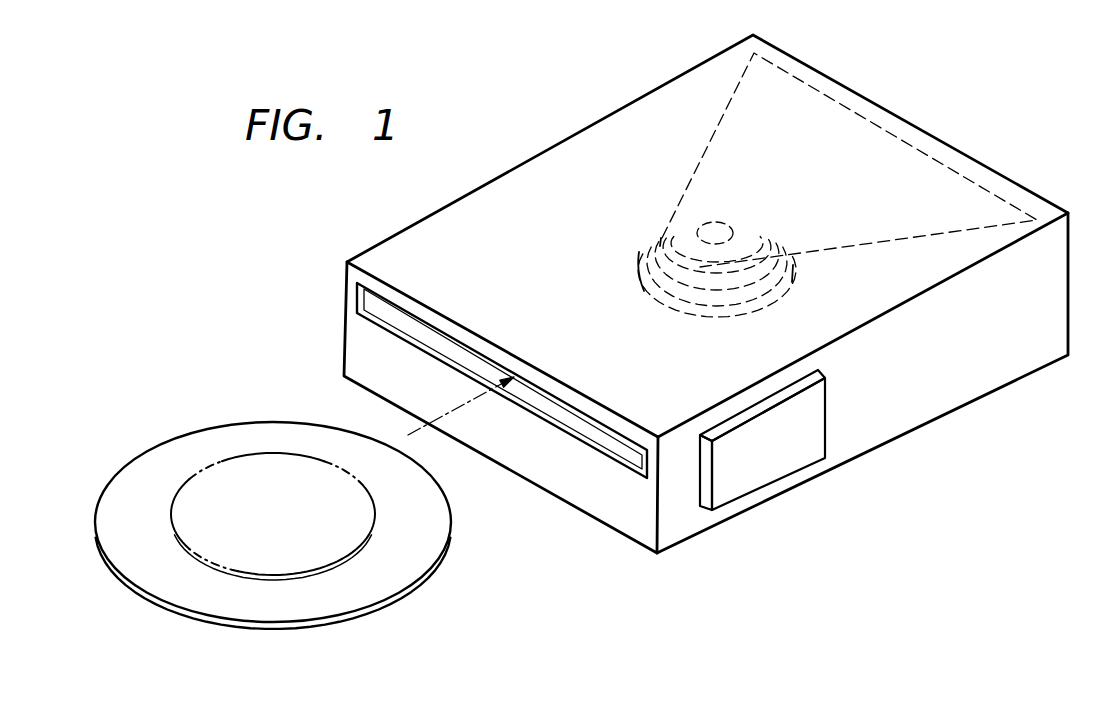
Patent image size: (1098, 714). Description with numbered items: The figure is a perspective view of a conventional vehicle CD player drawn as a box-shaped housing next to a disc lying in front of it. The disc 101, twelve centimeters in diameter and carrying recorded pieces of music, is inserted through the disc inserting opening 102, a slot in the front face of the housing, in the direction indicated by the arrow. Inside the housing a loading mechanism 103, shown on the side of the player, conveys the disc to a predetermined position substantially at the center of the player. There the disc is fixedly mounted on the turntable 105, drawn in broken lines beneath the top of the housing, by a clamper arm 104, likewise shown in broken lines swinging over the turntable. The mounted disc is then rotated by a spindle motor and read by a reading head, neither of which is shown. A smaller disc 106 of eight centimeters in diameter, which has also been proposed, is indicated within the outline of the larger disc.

The disc 101 is at (425, 560).
The disc inserting opening 102 is at (370, 300).
The loading mechanism 103 is at (777, 465).
The clamper arm 104 is at (723, 128).
The turntable 105 is at (637, 258).
The disc 106 is at (373, 515).